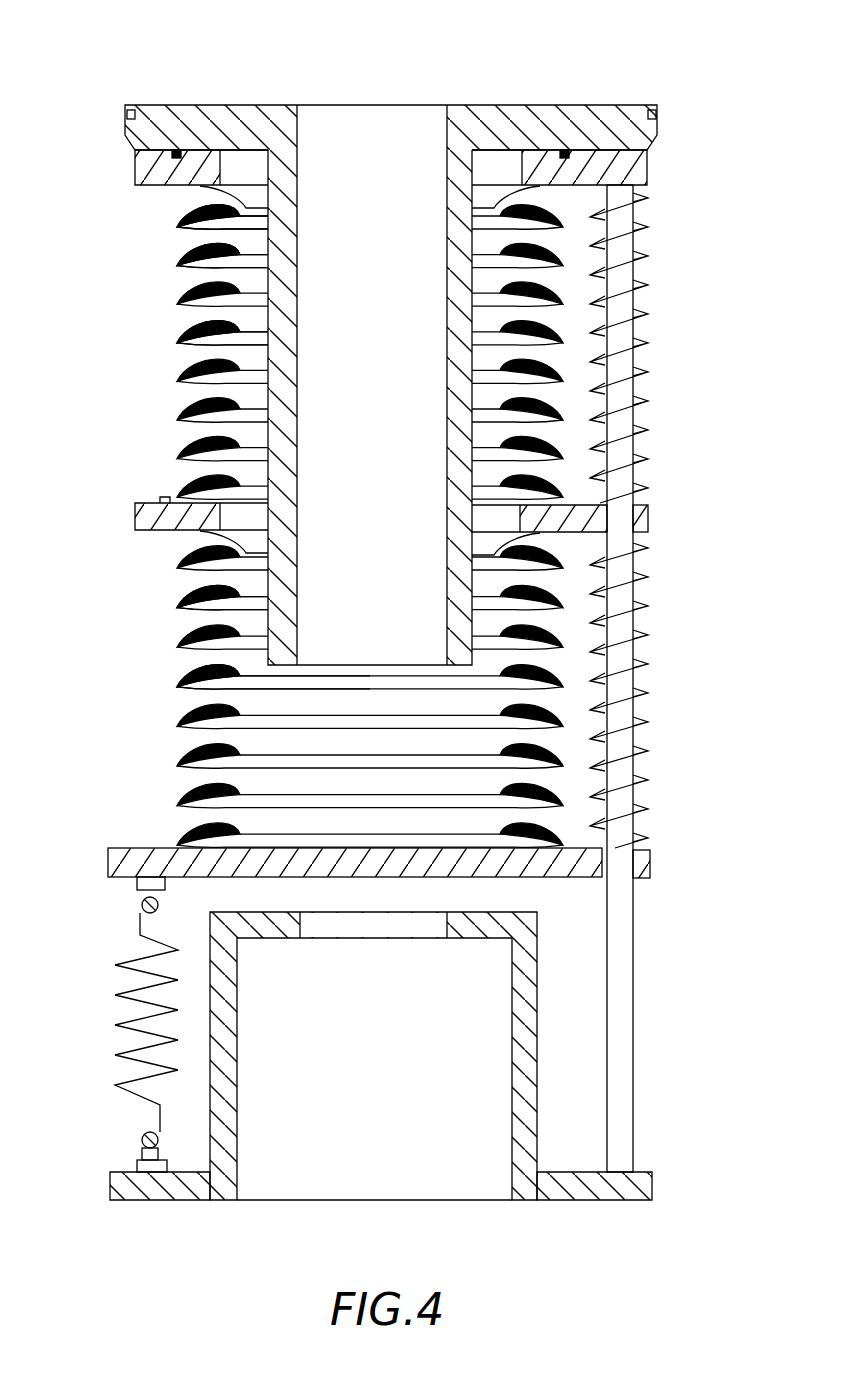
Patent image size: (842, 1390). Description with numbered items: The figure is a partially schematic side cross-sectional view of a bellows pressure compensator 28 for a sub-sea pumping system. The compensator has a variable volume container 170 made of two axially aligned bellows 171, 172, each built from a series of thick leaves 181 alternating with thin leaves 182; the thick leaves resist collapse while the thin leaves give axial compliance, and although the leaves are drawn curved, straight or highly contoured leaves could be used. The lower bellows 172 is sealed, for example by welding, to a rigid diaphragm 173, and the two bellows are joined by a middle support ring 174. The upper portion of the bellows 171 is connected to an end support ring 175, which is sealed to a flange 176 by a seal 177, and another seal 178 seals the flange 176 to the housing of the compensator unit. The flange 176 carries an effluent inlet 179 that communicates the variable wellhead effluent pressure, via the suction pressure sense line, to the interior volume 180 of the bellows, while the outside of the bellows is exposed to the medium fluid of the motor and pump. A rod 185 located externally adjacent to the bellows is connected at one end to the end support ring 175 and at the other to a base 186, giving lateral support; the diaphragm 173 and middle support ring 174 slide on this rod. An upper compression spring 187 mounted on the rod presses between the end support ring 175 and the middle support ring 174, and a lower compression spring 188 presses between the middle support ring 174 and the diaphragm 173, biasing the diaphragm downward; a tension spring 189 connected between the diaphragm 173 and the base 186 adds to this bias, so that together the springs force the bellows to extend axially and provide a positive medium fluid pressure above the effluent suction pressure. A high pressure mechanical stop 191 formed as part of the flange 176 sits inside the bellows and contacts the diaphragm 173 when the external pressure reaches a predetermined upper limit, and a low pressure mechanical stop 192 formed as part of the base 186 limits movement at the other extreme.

The pressure compensator 28 is at (180, 86).
The variable volume container 170 is at (329, 342).
The bellows 171 is at (195, 362).
The bellows 172 is at (190, 600).
The diaphragm 173 is at (130, 860).
The middle support ring 174 is at (147, 512).
The end support ring 175 is at (627, 168).
The flange 176 is at (587, 117).
The seal 177 is at (563, 150).
The seal 178 is at (653, 128).
The effluent inlet 179 is at (443, 135).
The interior volume 180 is at (319, 689).
The thick leaf 181 is at (198, 251).
The thin leaf 182 is at (205, 273).
The rod 185 is at (648, 298).
The base 186 is at (633, 1192).
The upper compression spring 187 is at (648, 428).
The lower compression spring 188 is at (648, 608).
The tension spring 189 is at (120, 992).
The high pressure mechanical stop 191 is at (322, 672).
The low pressure mechanical stop 192 is at (522, 910).